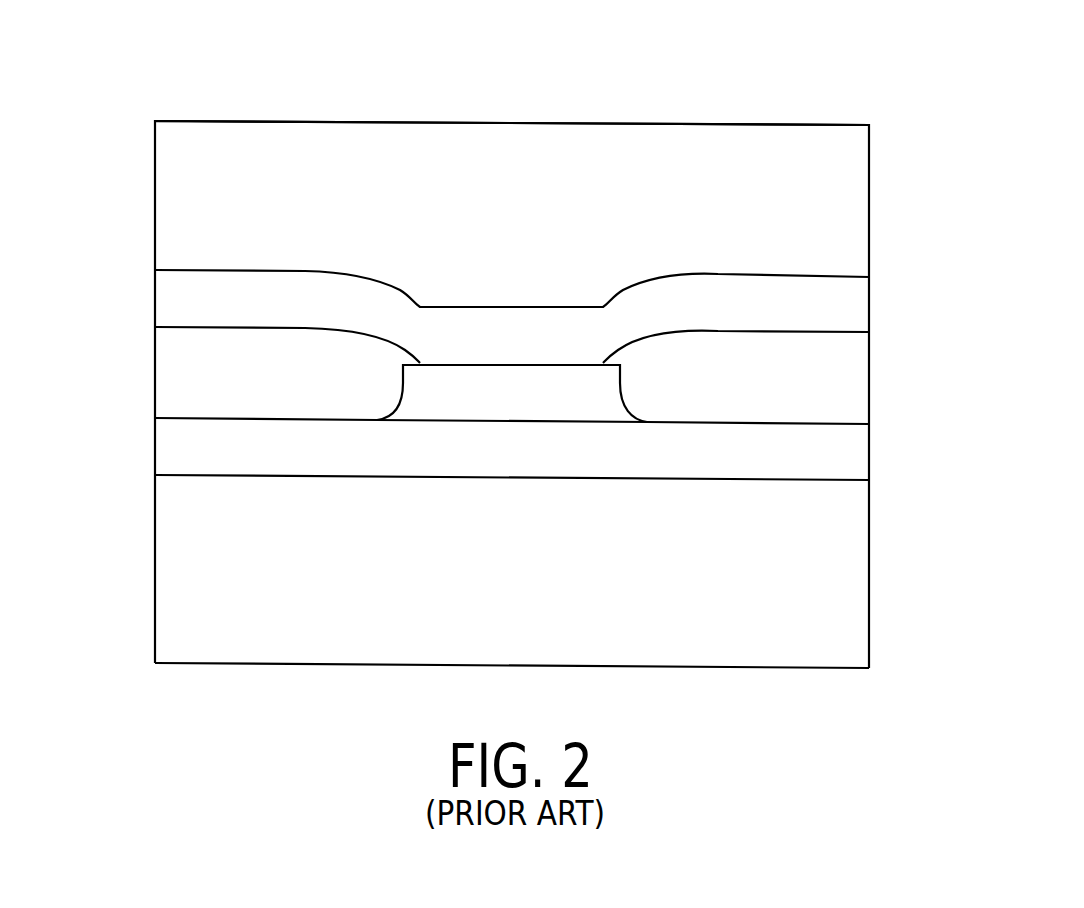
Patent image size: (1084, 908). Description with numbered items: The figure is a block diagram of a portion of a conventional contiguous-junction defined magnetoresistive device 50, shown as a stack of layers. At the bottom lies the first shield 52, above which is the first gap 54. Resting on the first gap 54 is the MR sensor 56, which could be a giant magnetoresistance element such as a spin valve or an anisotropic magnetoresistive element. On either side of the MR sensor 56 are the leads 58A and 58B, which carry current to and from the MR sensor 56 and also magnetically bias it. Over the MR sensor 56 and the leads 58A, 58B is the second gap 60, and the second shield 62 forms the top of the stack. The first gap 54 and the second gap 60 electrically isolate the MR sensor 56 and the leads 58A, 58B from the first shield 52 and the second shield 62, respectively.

The MR device 50 is at (534, 36).
The first shield 52 is at (155, 557).
The first gap 54 is at (155, 460).
The MR sensor 56 is at (403, 388).
The lead 58A is at (155, 392).
The lead 58B is at (869, 377).
The second gap 60 is at (869, 308).
The second shield 62 is at (869, 207).